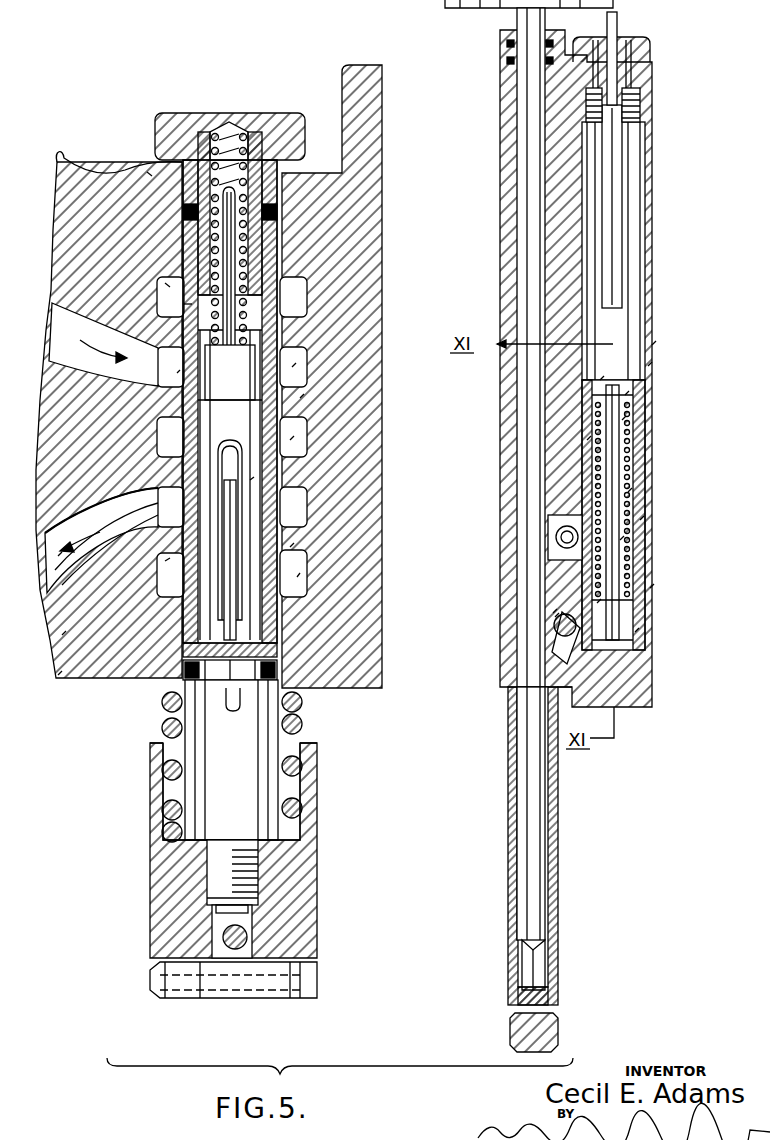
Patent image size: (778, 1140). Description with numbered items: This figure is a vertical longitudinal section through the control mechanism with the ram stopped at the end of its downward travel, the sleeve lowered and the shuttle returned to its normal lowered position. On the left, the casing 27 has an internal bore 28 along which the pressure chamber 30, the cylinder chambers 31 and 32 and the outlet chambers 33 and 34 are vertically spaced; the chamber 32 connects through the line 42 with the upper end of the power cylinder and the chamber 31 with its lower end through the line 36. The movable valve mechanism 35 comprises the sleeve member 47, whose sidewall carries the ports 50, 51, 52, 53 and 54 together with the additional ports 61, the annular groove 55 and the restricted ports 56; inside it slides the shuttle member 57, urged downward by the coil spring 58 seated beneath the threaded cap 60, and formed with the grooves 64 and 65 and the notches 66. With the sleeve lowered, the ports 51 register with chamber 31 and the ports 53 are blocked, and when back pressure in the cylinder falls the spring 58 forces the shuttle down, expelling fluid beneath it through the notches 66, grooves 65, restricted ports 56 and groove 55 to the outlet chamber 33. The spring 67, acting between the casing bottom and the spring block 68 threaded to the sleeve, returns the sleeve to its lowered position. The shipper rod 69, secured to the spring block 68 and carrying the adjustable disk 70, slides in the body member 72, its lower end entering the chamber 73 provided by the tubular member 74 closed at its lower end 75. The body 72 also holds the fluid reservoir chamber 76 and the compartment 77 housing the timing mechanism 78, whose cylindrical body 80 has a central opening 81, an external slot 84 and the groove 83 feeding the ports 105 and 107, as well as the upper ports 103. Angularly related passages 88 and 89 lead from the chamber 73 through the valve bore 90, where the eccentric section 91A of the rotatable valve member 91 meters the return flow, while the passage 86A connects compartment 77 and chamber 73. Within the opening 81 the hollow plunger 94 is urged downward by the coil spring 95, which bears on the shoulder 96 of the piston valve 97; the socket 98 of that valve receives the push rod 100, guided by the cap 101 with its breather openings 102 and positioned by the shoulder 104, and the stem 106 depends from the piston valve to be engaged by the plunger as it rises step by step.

The casing 27 is at (368, 252).
The internal bore 28 is at (273, 233).
The pressure chamber 30 is at (233, 442).
The cylinder chamber 31 is at (293, 497).
The cylinder chamber 32 is at (292, 367).
The outlet chamber 33 is at (297, 577).
The outlet chamber 34 is at (165, 283).
The valve mechanism 35 is at (258, 345).
The line 36 is at (58, 556).
The line 42 is at (71, 333).
The sleeve member 47 is at (273, 613).
The port 50 is at (169, 448).
The port 51 is at (67, 515).
The port 52 is at (177, 373).
The port 53 is at (165, 561).
The port 54 is at (188, 304).
The annular groove 55 is at (62, 635).
The restricted ports 56 is at (290, 547).
The shuttle member 57 is at (300, 398).
The coil spring 58 is at (247, 305).
The cap nut 60 is at (282, 113).
The additional ports 61 is at (250, 480).
The grooves 64 is at (290, 440).
The grooves 65 is at (58, 675).
The notches 66 is at (147, 172).
The spring 67 is at (292, 728).
The spring block 68 is at (300, 875).
The rod 69 is at (525, 307).
The disk 70 is at (318, 970).
The body member 72 is at (650, 305).
The chamber 73 is at (532, 970).
The tubular member 74 is at (558, 890).
The closed lower end 75 is at (515, 1000).
The chamber 76 is at (640, 257).
The compartment 77 is at (635, 455).
The timing mechanism 78 is at (640, 520).
The cylindrical body 80 is at (623, 580).
The central opening 81 is at (628, 432).
The groove 83 is at (587, 440).
The slot 84 is at (625, 395).
The passage 86A is at (557, 527).
The passage 88 is at (550, 635).
The passage 89 is at (567, 690).
The valve bore 90 is at (555, 625).
The rotatable valve member 91 is at (555, 617).
The eccentric section 91A is at (553, 613).
The plunger 94 is at (635, 632).
The coil spring 95 is at (628, 492).
The shoulder 96 is at (622, 420).
The piston valve 97 is at (650, 366).
The socket 98 is at (653, 345).
The push rod 100 is at (612, 228).
The cap 101 is at (643, 42).
The breather openings 102 is at (635, 68).
The ports 103 is at (600, 380).
The shoulder 104 is at (640, 94).
The port 105 is at (597, 603).
The stem 106 is at (620, 540).
The port 107 is at (650, 588).